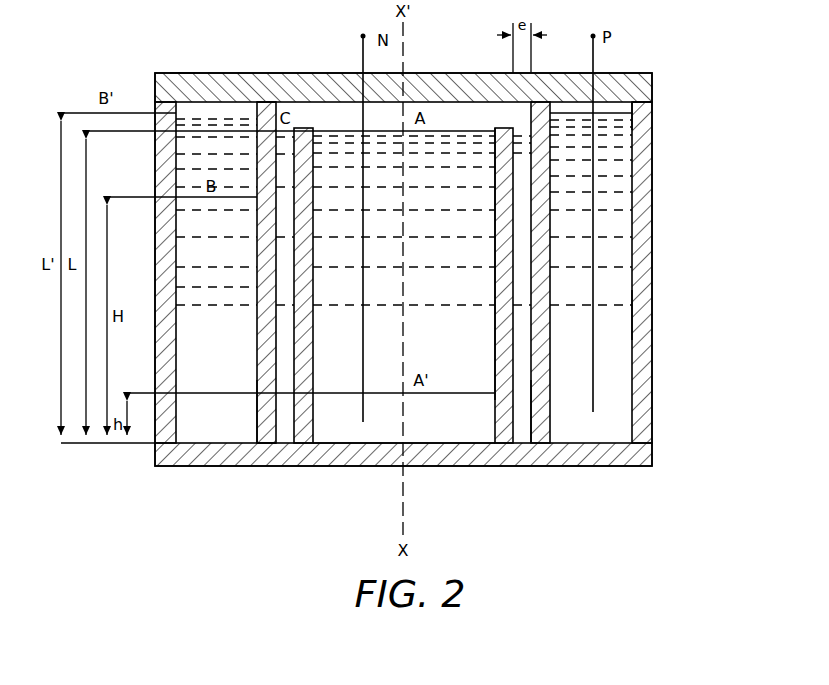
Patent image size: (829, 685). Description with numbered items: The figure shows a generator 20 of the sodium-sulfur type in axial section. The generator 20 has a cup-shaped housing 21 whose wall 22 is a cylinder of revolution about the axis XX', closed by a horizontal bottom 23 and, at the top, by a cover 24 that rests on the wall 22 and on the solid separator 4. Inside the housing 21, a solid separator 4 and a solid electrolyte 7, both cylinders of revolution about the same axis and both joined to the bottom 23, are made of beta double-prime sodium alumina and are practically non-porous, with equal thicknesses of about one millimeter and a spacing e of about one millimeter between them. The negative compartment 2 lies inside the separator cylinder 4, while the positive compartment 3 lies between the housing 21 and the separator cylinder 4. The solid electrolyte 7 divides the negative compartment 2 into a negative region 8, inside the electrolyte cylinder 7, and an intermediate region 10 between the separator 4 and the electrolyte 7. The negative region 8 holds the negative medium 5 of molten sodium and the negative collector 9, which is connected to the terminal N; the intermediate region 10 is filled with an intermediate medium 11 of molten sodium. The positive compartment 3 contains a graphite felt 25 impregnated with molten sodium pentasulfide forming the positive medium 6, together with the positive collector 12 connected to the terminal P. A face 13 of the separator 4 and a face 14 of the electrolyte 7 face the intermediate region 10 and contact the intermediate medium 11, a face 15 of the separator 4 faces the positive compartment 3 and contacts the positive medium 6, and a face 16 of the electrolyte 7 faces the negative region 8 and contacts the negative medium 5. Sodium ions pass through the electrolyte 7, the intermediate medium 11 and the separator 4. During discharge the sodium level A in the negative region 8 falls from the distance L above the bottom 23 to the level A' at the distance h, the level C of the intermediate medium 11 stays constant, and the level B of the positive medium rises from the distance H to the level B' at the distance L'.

The negative compartment 2 is at (290, 90).
The positive compartment 3 is at (222, 86).
The solid separator 4 is at (268, 400).
The negative medium 5 is at (330, 372).
The positive medium 6 is at (620, 214).
The solid electrolyte 7 is at (505, 417).
The negative region 8 is at (455, 418).
The negative collector 9 is at (366, 318).
The intermediate region 10 is at (520, 348).
The intermediate medium 11 is at (520, 410).
The positive collector 12 is at (596, 150).
The face of the solid separator 13 is at (272, 398).
The face of the solid electrolyte 14 is at (295, 292).
The face of the solid separator 15 is at (257, 403).
The face of the solid electrolyte 16 is at (495, 343).
The generator 20 is at (674, 58).
The housing 21 is at (652, 368).
The wall of the housing 22 is at (645, 113).
The bottom of the housing 23 is at (636, 466).
The cover 24 is at (186, 80).
The felt 25 is at (613, 315).